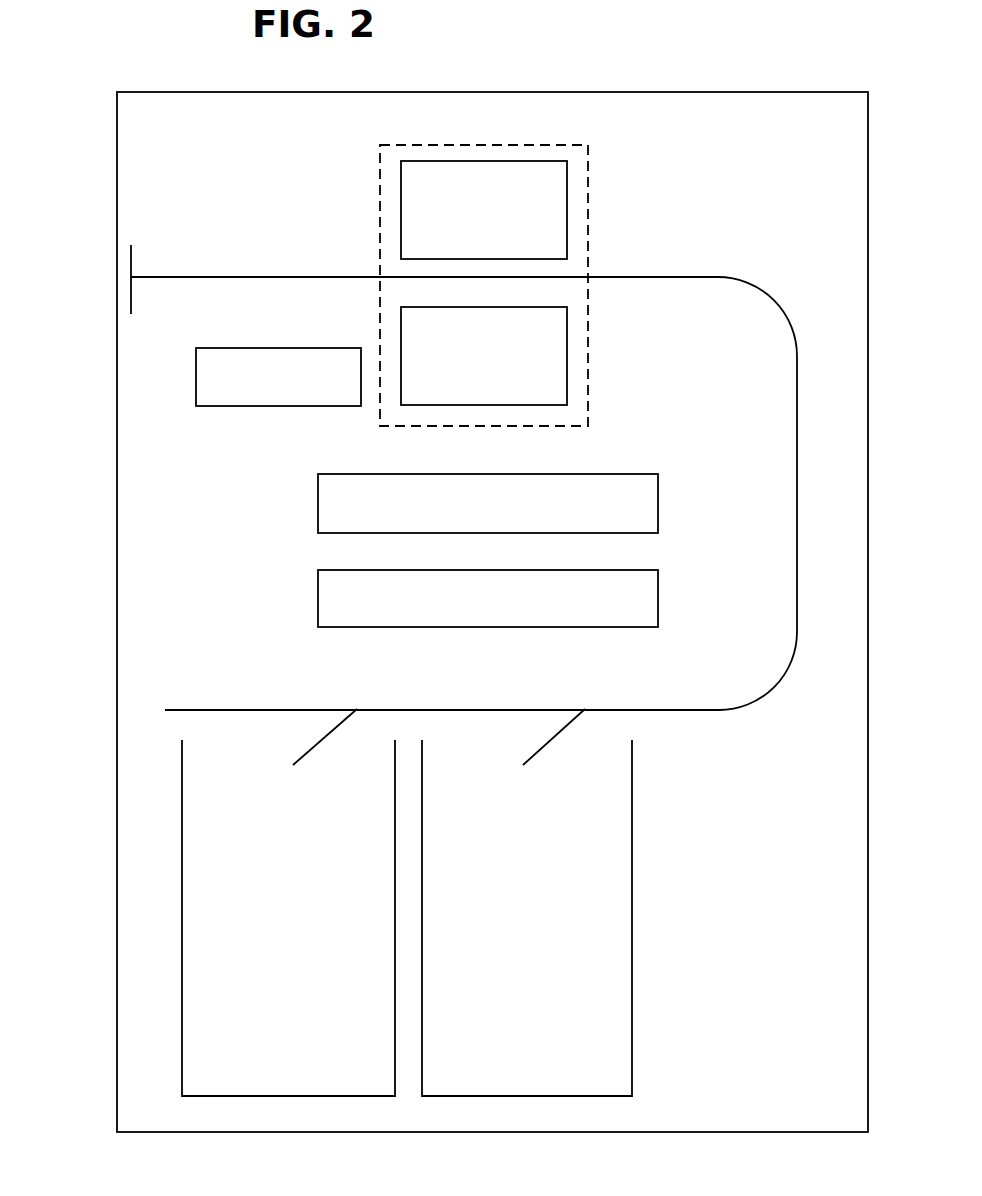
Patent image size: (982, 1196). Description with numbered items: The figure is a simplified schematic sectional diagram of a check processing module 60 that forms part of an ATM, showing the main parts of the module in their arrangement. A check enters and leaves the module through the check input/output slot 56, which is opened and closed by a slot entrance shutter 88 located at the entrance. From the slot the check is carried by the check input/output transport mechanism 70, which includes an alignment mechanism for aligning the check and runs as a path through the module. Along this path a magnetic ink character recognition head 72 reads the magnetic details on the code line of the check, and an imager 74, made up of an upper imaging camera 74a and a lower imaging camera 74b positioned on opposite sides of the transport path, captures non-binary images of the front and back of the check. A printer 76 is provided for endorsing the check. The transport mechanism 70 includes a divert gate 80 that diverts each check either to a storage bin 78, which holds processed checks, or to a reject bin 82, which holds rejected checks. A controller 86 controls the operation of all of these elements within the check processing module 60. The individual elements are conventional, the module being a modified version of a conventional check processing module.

The check input/output slot 56 is at (118, 277).
The check processing module 60 is at (743, 92).
The check input/output transport mechanism 70 is at (290, 277).
The magnetic ink character recognition (MICR) head 72 is at (223, 406).
The imager 74 is at (503, 145).
The upper imaging camera 74a is at (567, 208).
The lower imaging camera 74b is at (567, 373).
The printer 76 is at (318, 503).
The storage bin 78 is at (530, 1096).
The divert gate 80 is at (355, 705).
The reject bin 82 is at (285, 1096).
The controller 86 is at (318, 598).
The slot entrance shutter 88 is at (129, 257).